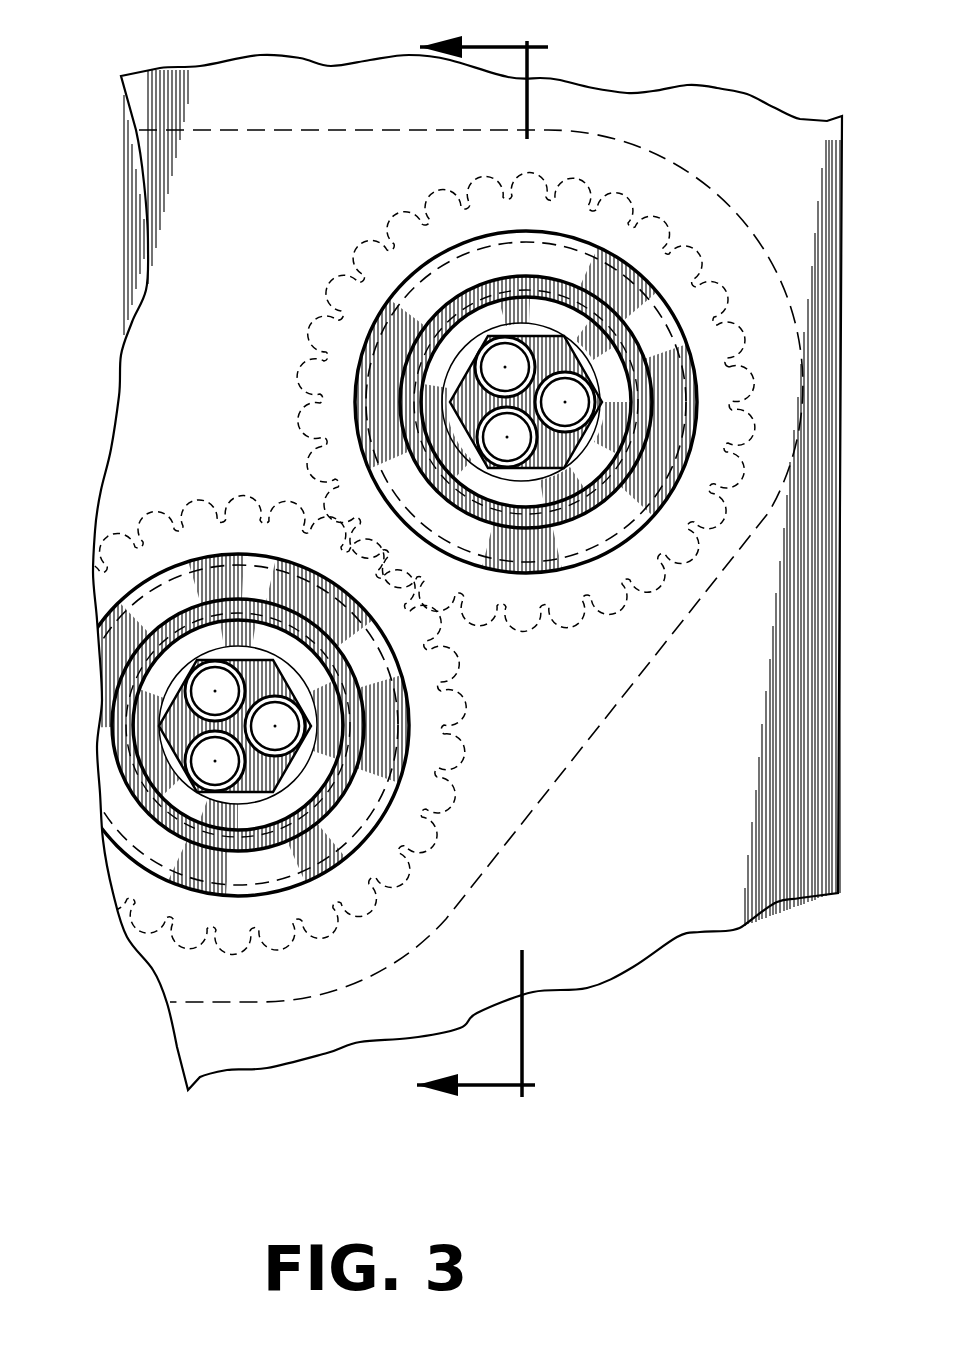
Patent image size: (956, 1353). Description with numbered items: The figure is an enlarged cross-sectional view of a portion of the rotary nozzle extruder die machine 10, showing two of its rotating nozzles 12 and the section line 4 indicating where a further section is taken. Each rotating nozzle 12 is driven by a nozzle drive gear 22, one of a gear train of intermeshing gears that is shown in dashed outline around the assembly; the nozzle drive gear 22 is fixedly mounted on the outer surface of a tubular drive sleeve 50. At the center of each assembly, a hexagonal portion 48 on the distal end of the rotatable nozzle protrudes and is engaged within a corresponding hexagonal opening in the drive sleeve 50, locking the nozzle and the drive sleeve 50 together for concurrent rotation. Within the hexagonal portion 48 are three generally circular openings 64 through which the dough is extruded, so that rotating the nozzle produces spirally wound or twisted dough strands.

The section line 4- 4 is at (482, 568).
The rotary nozzle extruder die machine 10 is at (116, 327).
The rotating nozzle 12 is at (455, 340).
The nozzle drive gear 22 is at (812, 285).
The hexagonal portion 48 is at (490, 480).
The tubular drive sleeve 50 is at (608, 442).
The circular openings 64 is at (487, 364).